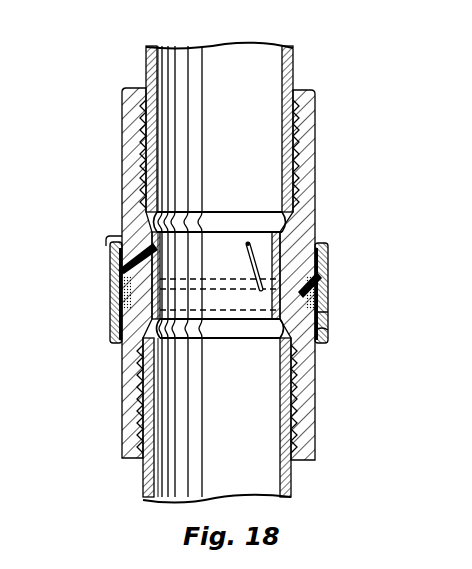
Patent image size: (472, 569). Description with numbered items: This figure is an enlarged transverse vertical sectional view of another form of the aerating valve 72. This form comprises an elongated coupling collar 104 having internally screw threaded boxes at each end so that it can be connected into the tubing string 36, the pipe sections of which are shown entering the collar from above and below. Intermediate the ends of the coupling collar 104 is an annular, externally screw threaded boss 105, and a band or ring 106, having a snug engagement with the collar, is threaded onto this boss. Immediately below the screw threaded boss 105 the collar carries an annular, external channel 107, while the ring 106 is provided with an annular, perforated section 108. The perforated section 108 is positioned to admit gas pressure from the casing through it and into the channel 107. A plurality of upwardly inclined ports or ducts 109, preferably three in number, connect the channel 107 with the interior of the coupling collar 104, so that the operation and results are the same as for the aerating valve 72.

The tubing string 36 is at (152, 63).
The aerating valve 72 is at (312, 132).
The coupling collar 104 is at (132, 190).
The externally screw threaded boss 105 is at (112, 238).
The ring 106 is at (111, 326).
The external channel 107 is at (327, 313).
The perforated section 108 is at (331, 282).
The ports 109 is at (117, 268).